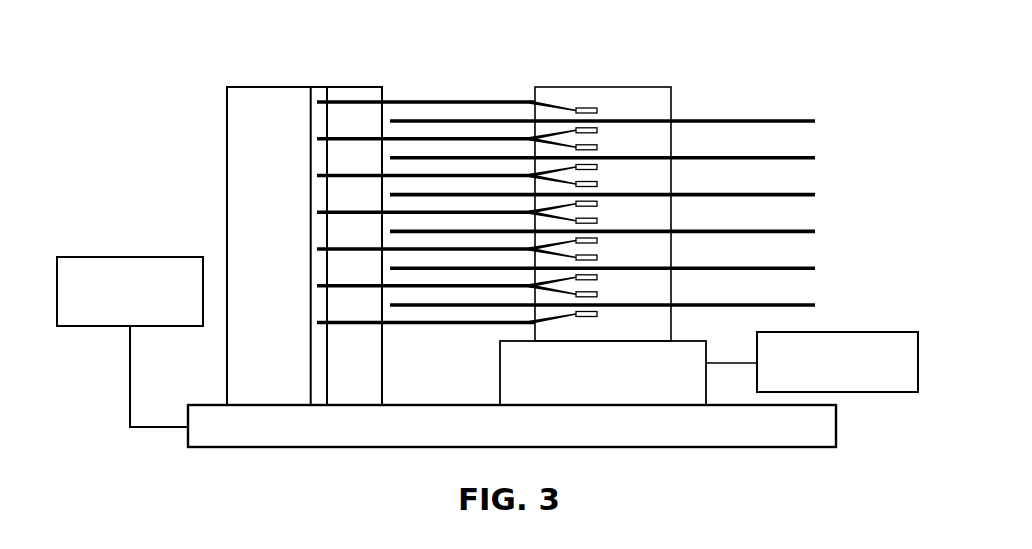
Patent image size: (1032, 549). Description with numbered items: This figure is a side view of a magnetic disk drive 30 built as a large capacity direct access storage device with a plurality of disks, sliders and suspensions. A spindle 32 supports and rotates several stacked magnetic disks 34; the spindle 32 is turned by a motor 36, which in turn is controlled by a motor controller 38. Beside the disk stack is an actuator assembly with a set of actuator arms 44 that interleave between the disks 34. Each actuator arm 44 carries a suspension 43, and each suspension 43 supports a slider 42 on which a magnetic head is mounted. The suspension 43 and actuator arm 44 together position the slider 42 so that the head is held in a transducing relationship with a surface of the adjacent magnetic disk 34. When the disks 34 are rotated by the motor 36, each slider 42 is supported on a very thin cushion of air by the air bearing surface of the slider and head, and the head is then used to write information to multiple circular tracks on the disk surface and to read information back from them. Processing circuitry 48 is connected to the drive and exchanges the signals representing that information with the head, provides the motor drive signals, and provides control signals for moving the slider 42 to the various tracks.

The magnetic disk drive 30 is at (750, 91).
The spindle 32 is at (661, 87).
The magnetic disk 34 is at (813, 122).
The motor 36 is at (613, 385).
The motor controller 38 is at (874, 393).
The slider 42 is at (597, 130).
The suspension 43 is at (560, 138).
The actuator arm 44 is at (500, 137).
The processing circuitry 48 is at (100, 257).